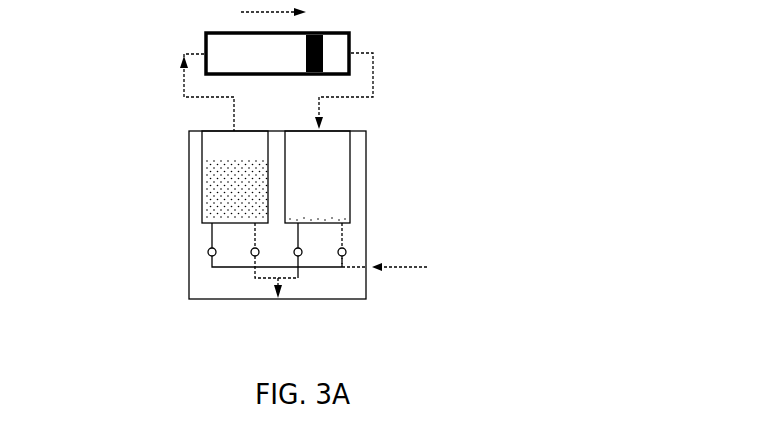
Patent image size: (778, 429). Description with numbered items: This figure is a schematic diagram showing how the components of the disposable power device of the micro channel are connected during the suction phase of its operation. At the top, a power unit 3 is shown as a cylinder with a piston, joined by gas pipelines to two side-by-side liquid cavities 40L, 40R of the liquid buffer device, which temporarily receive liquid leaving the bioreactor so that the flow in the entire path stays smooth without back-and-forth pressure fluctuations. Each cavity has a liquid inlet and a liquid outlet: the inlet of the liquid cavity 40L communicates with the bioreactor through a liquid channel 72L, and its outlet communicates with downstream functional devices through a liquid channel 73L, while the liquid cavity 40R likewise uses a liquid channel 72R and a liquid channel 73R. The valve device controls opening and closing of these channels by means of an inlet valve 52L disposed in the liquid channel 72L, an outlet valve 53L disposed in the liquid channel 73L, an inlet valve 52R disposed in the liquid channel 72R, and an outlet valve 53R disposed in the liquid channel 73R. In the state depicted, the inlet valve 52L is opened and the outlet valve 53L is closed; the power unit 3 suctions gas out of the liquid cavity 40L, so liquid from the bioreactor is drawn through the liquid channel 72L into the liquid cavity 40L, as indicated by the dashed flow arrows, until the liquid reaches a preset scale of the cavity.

The power unit 3 is at (338, 50).
The liquid cavity 40L is at (223, 178).
The liquid cavity 40R is at (338, 188).
The liquid channel 72L is at (211, 241).
The liquid channel 72R is at (342, 242).
The inlet valve 52L is at (208, 252).
The inlet valve 52R is at (346, 252).
The outlet valve 53L is at (251, 253).
The outlet valve 53R is at (302, 254).
The liquid channel 73L is at (252, 278).
The liquid channel 73R is at (340, 299).